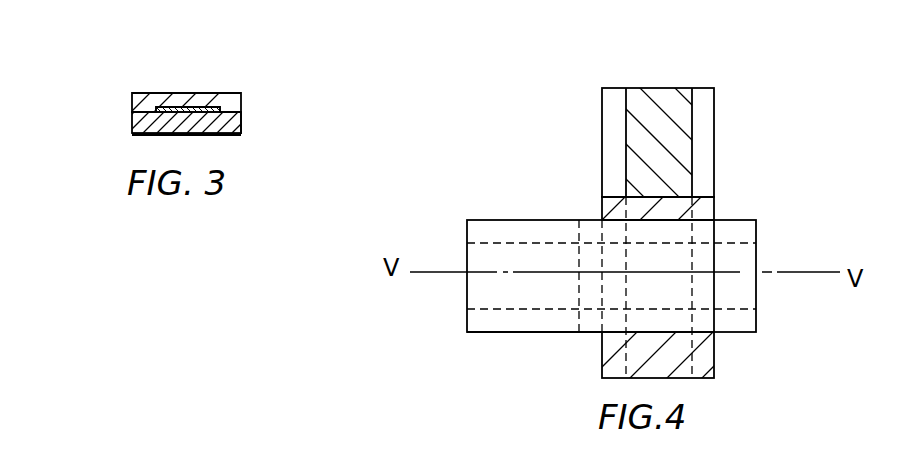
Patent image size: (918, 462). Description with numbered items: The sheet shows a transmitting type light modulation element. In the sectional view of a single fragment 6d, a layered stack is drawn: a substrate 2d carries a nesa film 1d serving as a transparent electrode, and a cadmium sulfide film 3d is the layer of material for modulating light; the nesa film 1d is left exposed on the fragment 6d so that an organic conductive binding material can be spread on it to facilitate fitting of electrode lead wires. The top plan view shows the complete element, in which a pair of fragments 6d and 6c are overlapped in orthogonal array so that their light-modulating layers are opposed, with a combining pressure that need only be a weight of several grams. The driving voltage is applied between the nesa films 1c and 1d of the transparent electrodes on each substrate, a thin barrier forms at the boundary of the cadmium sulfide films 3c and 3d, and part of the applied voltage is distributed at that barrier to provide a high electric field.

In FIG. 3, the nesa film 1d is at (205, 101).
In FIG. 4, the nesa film 1d is at (692, 121).
In FIG. 3, the substrate 2d is at (133, 134).
In FIG. 3, the cadmium sulfide film 3d is at (185, 92).
In FIG. 4, the cadmium sulfide film 3d is at (715, 208).
In FIG. 3, the fragment 6d is at (241, 133).
In FIG. 4, the fragment 6d is at (714, 162).
In FIG. 4, the nesa film 1c is at (487, 322).
In FIG. 4, the cadmium sulfide film 3c is at (754, 253).
In FIG. 4, the fragment 6c is at (527, 333).